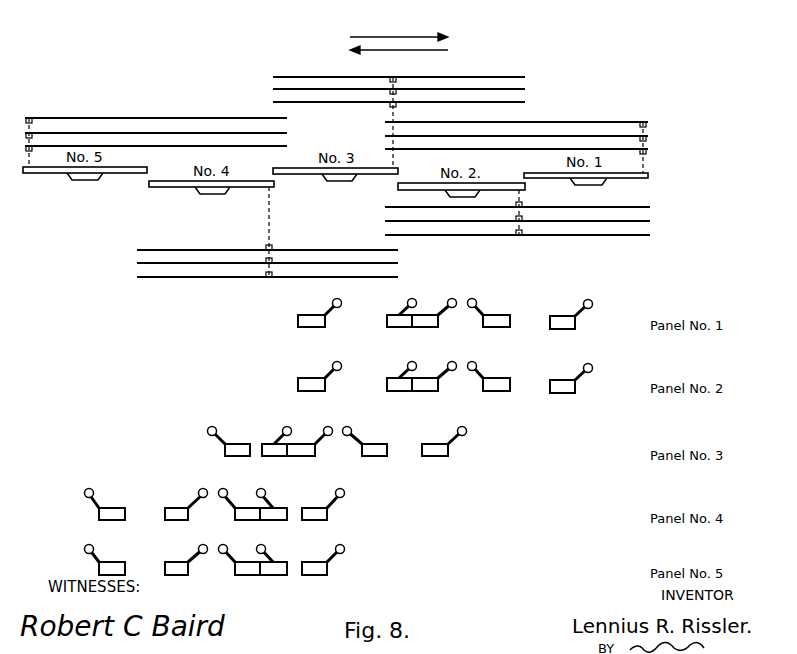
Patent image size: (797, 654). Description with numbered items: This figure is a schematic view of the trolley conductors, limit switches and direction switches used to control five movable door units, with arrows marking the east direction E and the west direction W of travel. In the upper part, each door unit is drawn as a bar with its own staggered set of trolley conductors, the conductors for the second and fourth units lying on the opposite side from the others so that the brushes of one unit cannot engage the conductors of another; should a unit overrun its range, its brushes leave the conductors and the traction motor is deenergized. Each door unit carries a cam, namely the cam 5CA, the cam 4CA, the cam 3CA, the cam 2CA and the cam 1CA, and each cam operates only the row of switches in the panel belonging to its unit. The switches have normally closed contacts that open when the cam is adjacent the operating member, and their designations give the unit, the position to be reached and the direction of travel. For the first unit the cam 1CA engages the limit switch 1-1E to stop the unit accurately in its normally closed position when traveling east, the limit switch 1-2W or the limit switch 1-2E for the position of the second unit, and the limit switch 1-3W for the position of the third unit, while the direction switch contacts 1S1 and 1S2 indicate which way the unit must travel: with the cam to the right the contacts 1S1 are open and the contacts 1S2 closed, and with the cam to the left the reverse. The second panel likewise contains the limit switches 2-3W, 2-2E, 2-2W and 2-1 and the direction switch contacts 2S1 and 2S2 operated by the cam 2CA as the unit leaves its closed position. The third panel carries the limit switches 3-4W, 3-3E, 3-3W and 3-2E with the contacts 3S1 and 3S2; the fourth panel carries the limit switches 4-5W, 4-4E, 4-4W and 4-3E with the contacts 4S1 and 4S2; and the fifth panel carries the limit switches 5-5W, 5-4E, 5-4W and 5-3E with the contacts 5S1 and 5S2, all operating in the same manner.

The east direction E is at (409, 37).
The west direction W is at (411, 50).
The cam for door unit No. 5 5CA is at (102, 178).
The cam for door unit No. 4 4CA is at (228, 192).
The cam for door unit No. 3 3CA is at (347, 179).
The cam for door unit No. 2 2CA is at (449, 192).
The cam for door unit No. 1 1CA is at (598, 183).
The limit switch 1-3W is at (305, 323).
The direction switch contacts 1S1 is at (400, 323).
The direction switch contacts 1S2 is at (404, 324).
The limit switch 1-2E is at (424, 323).
The limit switch 1-2W is at (492, 323).
The limit switch 1-1E is at (562, 325).
The limit switch 2-3W is at (314, 387).
The direction switch contacts 2S1 is at (400, 386).
The direction switch contacts 2S2 is at (404, 387).
The limit switch 2-2E is at (424, 386).
The limit switch 2-2W is at (492, 387).
The limit switch 2-1 is at (565, 389).
The limit switch 3-4W is at (240, 452).
The direction switch contacts 3S1 is at (282, 452).
The direction switch contacts 3S2 is at (285, 453).
The limit switch 3-3E is at (298, 451).
The limit switch 3-3W is at (371, 451).
The limit switch 3-2E is at (434, 451).
The limit switch 4-5W is at (119, 516).
The limit switch 4-4E is at (185, 516).
The limit switch 4-4W is at (250, 516).
The direction switch contacts 4S1 is at (276, 516).
The direction switch contacts 4S2 is at (272, 516).
The limit switch 4-3E is at (318, 516).
The limit switch 5-5W is at (106, 568).
The limit switch 5-4E is at (173, 571).
The limit switch 5-4W is at (245, 571).
The direction switch contacts 5S1 is at (276, 572).
The direction switch contacts 5S2 is at (272, 572).
The limit switch 5-3E is at (321, 572).